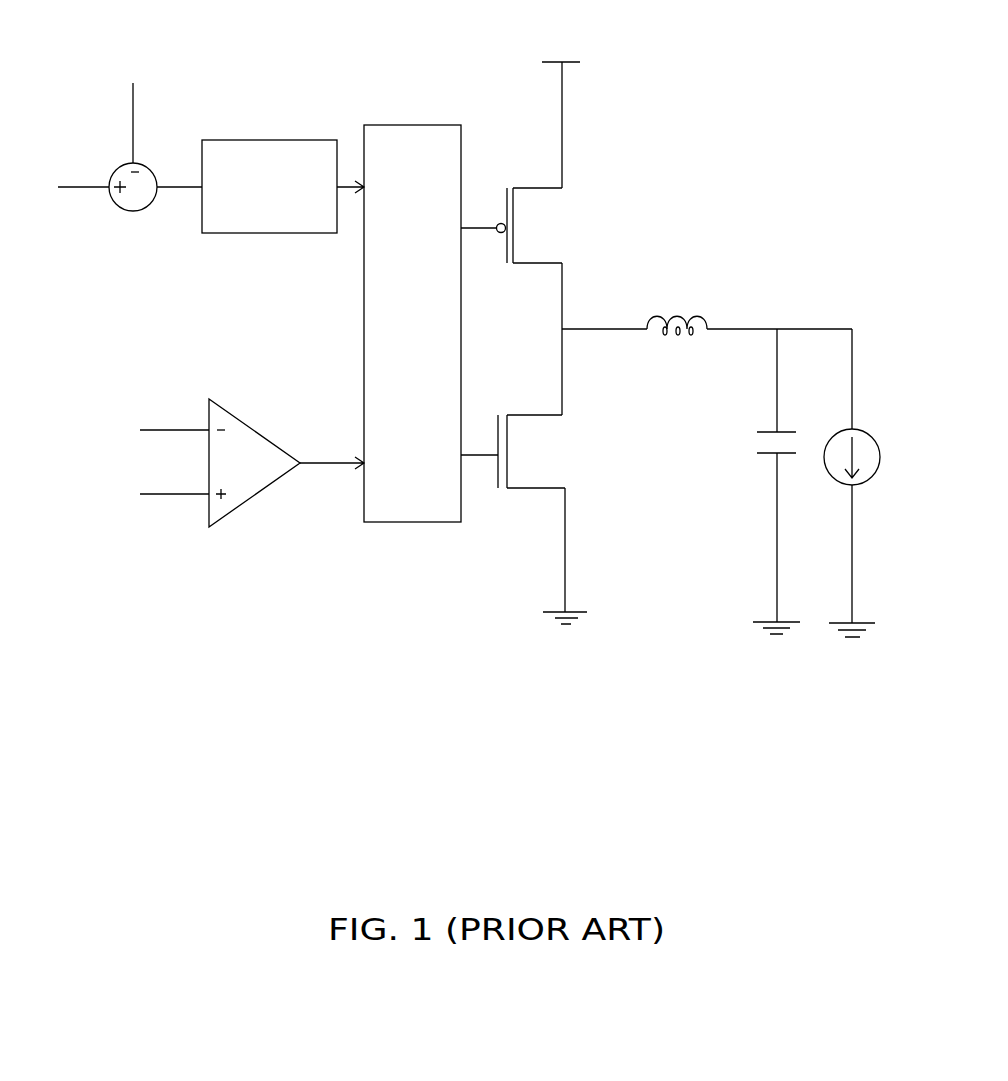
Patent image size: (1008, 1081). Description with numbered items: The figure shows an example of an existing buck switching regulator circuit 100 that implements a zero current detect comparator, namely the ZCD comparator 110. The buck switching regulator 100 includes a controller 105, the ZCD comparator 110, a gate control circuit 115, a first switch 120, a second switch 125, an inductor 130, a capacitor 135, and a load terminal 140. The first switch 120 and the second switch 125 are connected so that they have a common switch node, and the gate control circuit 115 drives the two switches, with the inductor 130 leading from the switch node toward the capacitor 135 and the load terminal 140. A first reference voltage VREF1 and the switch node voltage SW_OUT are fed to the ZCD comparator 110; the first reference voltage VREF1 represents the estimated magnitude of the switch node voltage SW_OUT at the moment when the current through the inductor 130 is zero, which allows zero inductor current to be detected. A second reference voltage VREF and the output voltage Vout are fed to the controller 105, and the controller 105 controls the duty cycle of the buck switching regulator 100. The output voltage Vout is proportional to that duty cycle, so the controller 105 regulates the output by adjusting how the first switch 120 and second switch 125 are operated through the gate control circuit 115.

The buck switching regulator circuit 100 is at (172, 645).
The controller 105 is at (302, 140).
The ZCD comparator 110 is at (222, 402).
The gate control circuit 115 is at (434, 125).
The first switch 120 is at (540, 188).
The second switch 125 is at (547, 415).
The inductor 130 is at (668, 317).
The capacitor 135 is at (765, 432).
The load terminal 140 is at (845, 430).